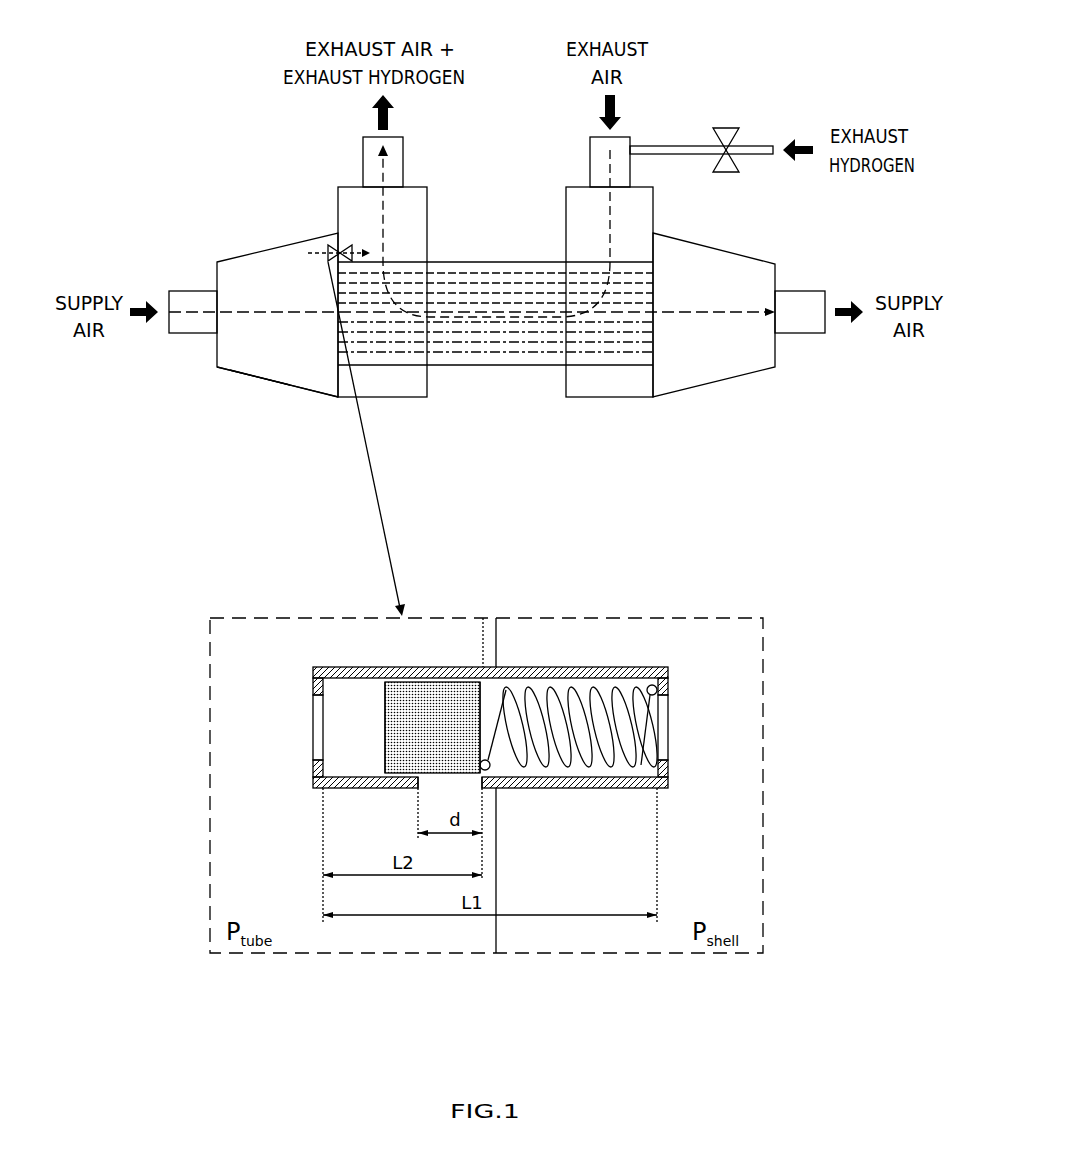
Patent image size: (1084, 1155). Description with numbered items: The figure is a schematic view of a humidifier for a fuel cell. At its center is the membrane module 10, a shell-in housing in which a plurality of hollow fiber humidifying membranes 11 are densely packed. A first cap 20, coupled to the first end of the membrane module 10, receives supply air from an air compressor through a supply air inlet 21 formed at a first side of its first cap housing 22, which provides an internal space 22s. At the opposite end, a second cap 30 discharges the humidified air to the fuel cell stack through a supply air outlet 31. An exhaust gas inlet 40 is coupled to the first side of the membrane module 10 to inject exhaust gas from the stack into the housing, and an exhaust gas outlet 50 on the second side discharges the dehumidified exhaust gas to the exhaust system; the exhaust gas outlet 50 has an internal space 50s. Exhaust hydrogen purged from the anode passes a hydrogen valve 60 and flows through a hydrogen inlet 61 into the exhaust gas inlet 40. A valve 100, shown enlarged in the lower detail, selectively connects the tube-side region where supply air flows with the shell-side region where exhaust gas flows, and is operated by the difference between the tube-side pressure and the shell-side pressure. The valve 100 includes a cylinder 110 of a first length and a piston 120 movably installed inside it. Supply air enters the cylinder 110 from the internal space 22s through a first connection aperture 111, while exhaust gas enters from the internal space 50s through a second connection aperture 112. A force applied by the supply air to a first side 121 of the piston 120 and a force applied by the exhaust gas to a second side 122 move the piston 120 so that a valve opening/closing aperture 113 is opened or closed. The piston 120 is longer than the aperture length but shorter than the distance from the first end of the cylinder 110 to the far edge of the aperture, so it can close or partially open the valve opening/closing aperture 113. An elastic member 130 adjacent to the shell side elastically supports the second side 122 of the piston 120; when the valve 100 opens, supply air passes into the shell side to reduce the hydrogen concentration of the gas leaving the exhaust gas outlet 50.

The membrane module 10 is at (521, 378).
The humidifying membranes 11 is at (457, 357).
The first cap 20 is at (306, 408).
The supply air inlet 21 is at (177, 334).
The first cap housing 22 is at (278, 385).
The internal space 22s is at (254, 358).
The second cap 30 is at (724, 396).
The supply air outlet 31 is at (800, 300).
The exhaust gas inlet 40 is at (559, 175).
The exhaust gas outlet 50 is at (441, 175).
The internal space of the exhaust gas outlet 50s is at (352, 194).
The hydrogen valve 60 is at (724, 128).
The hydrogen inlet 61 is at (670, 146).
The valve 100 is at (322, 232).
The cylinder 110 is at (630, 672).
The first connection aperture 111 is at (306, 728).
The second connection aperture 112 is at (675, 728).
The valve opening/closing aperture 113 is at (447, 796).
The piston 120 is at (430, 690).
The first side of the piston 121 is at (383, 710).
The second side of the piston 122 is at (489, 695).
The elastic member 130 is at (567, 690).